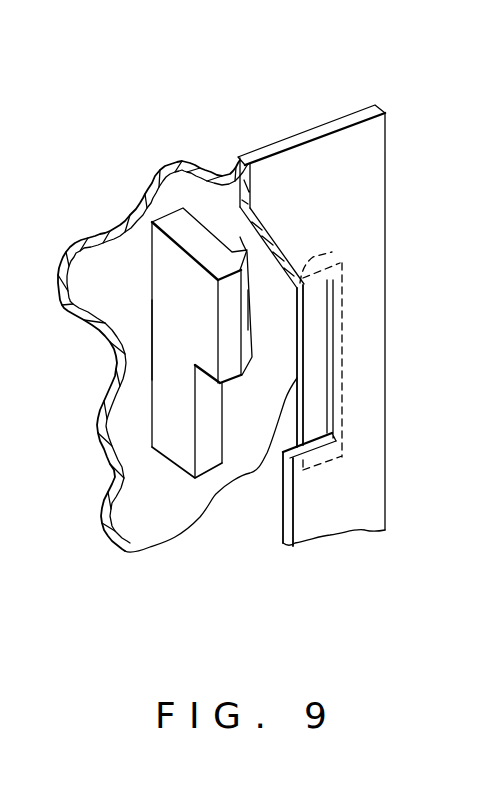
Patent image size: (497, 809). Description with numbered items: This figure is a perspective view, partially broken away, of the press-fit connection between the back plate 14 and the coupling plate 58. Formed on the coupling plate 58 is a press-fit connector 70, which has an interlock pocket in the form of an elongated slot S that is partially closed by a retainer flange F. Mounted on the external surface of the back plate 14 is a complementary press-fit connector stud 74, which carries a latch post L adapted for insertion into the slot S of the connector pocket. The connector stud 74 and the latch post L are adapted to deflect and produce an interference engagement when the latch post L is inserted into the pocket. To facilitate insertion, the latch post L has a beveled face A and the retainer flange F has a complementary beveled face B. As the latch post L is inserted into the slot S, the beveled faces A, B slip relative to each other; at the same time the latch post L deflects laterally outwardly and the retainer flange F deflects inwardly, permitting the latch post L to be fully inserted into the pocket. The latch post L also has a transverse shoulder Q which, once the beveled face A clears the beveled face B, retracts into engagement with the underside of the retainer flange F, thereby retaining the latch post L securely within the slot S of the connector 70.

The back plate 14 is at (65, 235).
The coupling plate 58 is at (338, 310).
The press-fit connector 70 is at (332, 252).
The press-fit connector stud 74 is at (177, 223).
The latch post L is at (178, 302).
The beveled face A is at (248, 311).
The beveled face B is at (300, 350).
The retainer flange F is at (300, 421).
The transverse shoulder Q is at (243, 238).
The slot S is at (330, 360).